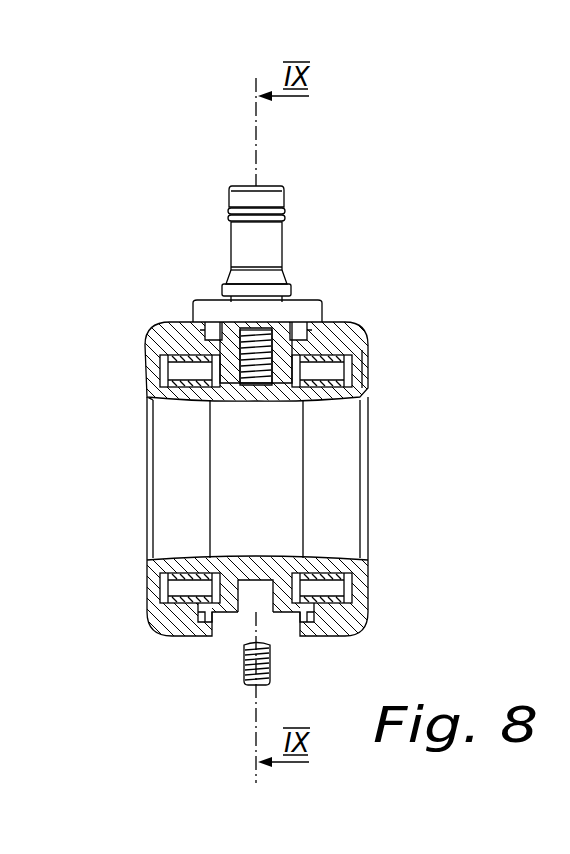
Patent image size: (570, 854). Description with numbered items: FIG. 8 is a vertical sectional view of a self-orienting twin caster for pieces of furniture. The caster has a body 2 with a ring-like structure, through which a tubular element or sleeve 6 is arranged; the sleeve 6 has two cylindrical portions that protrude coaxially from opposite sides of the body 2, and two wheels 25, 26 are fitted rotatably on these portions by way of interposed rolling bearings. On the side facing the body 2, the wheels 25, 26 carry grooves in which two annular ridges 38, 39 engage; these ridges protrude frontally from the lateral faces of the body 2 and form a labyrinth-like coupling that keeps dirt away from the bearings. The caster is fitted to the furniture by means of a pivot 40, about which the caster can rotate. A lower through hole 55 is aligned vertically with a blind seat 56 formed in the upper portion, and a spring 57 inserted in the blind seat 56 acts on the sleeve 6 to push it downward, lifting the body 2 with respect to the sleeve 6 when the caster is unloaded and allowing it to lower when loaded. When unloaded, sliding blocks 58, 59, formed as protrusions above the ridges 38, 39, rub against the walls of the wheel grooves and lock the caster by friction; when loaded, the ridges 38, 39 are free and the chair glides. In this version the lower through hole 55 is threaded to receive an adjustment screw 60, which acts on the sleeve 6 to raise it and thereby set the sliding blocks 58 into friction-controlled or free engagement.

The body 2 is at (226, 316).
The tubular element or sleeve 6 is at (322, 553).
The wheel 25 is at (140, 622).
The wheel 26 is at (378, 633).
The annular ridge 38 is at (208, 638).
The annular ridge 39 is at (302, 610).
The pivot 40 is at (298, 249).
The lower through hole 55 is at (255, 590).
The blind seat 56 is at (268, 338).
The spring 57 is at (262, 362).
The sliding block 58 is at (165, 333).
The sliding block 59 is at (365, 340).
The adjustment screw 60 is at (247, 665).